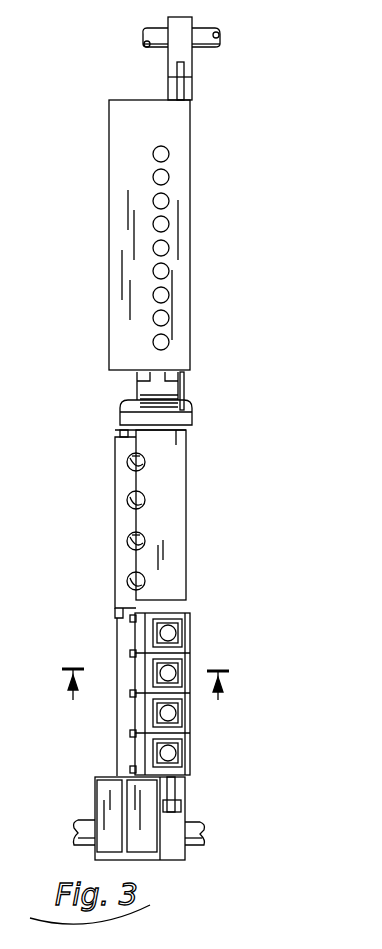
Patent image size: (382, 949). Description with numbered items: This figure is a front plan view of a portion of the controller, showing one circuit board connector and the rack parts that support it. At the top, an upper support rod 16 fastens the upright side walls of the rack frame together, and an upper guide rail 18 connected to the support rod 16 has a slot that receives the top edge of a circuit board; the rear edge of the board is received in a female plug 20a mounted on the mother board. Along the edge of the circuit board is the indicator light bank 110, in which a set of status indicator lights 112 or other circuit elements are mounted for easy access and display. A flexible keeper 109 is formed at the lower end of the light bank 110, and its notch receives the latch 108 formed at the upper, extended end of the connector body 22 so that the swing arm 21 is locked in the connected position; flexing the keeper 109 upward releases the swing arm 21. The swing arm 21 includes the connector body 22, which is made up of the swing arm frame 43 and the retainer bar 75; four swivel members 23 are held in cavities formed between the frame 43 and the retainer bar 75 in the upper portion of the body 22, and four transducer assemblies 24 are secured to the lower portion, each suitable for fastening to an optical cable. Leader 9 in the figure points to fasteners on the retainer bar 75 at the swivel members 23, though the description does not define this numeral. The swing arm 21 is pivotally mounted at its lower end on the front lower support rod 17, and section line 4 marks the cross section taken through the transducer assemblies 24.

The upper guide rails 18 is at (187, 23).
The upper support rods 16 is at (160, 47).
The female plugs 20a is at (193, 92).
The indicator light bank 110 is at (100, 295).
The status indicator lights 112 is at (153, 154).
The flexible keeper 109 is at (184, 398).
The latch 108 is at (193, 424).
The swing arm 21 is at (118, 422).
The swing arm frame 43 is at (186, 550).
The retainer bar 75 is at (115, 478).
The screws 9 is at (127, 462).
The swivel members 23 is at (143, 530).
The connector body 22 is at (112, 578).
The transducer assemblies 24 is at (143, 713).
The lower support rods 17 is at (85, 820).
The section line 4- 4 is at (143, 701).